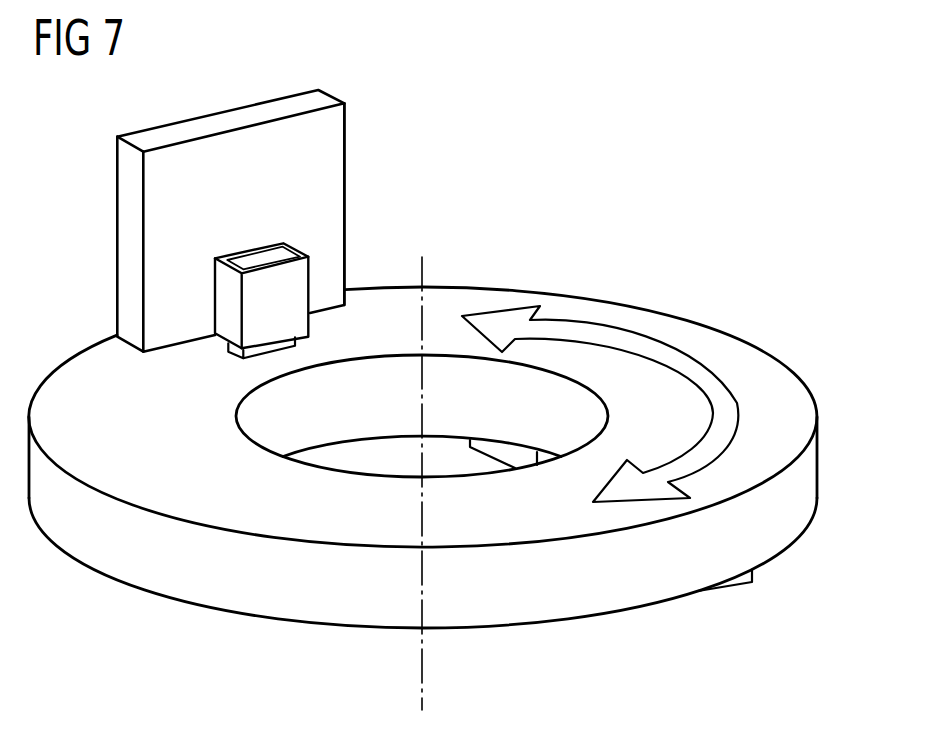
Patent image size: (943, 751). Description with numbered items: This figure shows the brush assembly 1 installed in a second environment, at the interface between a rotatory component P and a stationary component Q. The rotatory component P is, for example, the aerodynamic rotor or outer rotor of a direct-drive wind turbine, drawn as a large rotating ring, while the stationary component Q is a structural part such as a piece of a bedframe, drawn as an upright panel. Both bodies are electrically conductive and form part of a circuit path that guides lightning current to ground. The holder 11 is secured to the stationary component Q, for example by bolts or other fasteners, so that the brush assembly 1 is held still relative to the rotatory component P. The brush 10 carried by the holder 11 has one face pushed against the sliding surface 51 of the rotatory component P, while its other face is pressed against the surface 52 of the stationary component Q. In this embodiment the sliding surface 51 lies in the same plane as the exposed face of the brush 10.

The brush assembly 1 is at (282, 224).
The stationary component Q is at (333, 172).
The surface of the stationary component 52 is at (333, 222).
The rotatory component P is at (453, 295).
The sliding surface 51 is at (89, 353).
The holder 11 is at (222, 303).
The brush 10 is at (297, 338).